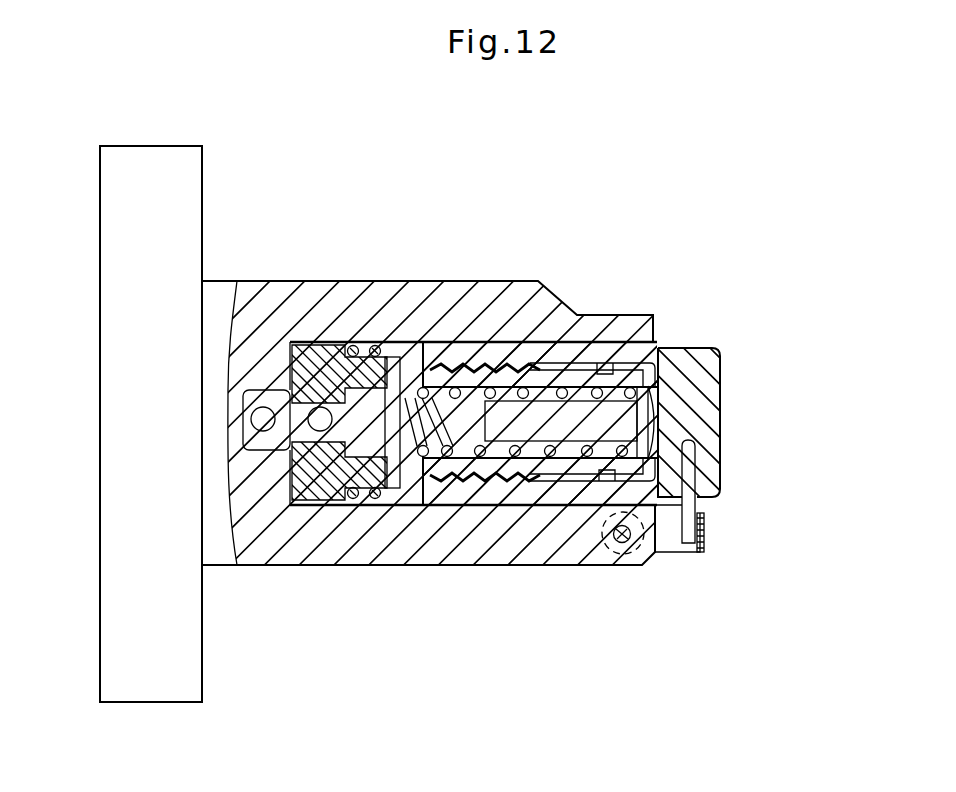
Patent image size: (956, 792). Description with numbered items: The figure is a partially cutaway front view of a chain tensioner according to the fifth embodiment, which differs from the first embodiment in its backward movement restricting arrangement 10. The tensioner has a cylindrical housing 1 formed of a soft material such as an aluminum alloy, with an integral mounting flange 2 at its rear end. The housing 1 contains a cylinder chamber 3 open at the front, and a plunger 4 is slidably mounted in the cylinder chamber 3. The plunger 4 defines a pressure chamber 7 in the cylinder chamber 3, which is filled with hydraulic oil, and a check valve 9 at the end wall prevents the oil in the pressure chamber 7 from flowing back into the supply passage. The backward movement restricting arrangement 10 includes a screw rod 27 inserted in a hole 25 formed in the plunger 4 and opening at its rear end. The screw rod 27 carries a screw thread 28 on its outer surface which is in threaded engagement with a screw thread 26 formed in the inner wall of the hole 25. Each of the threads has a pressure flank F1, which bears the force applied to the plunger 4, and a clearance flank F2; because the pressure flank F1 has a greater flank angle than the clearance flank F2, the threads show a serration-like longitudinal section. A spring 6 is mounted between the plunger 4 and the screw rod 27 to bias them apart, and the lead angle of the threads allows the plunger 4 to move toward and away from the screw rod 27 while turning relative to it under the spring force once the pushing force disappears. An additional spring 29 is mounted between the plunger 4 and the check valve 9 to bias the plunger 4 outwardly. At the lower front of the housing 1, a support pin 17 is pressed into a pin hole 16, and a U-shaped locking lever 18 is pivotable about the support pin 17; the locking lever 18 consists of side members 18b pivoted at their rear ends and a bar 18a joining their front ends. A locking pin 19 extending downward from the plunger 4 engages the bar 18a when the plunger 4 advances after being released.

The cylindrical housing 1 is at (268, 280).
The mounting flange 2 is at (143, 152).
The cylinder chamber 3 is at (480, 350).
The plunger 4 is at (720, 358).
The spring 6 is at (646, 388).
The pressure chamber 7 is at (375, 358).
The check valve 9 is at (318, 510).
The backward movement restricting arrangement 10 is at (445, 350).
The pin hole 16 is at (612, 545).
The support pin 17 is at (628, 542).
The locking lever 18 is at (708, 530).
The bar 18a is at (703, 545).
The side members 18b is at (672, 545).
The locking pin 19 is at (692, 503).
The hole 25 is at (604, 363).
The screw thread 26 is at (510, 370).
The screw rod 27 is at (531, 363).
The screw thread 28 is at (540, 375).
The additional spring 29 is at (352, 346).
The pressure flank F1 is at (483, 478).
The clearance flank F2 is at (435, 508).